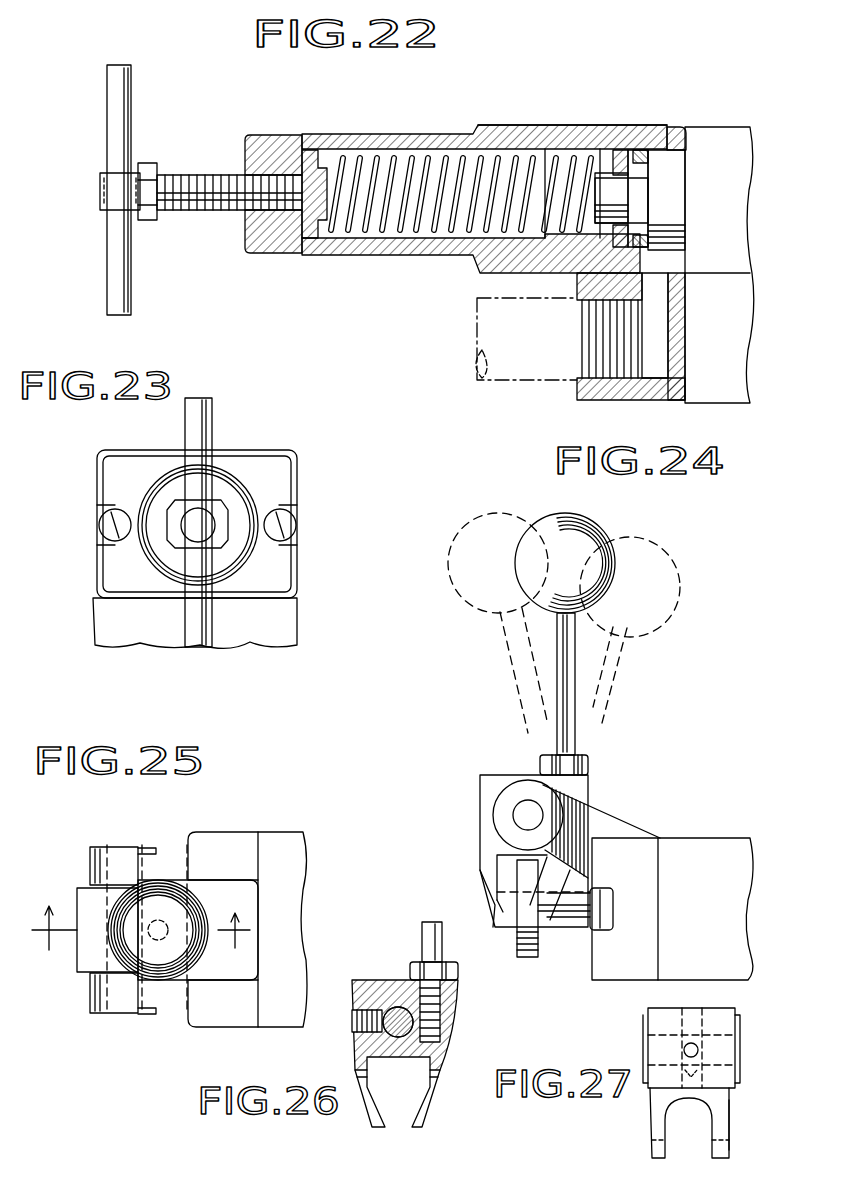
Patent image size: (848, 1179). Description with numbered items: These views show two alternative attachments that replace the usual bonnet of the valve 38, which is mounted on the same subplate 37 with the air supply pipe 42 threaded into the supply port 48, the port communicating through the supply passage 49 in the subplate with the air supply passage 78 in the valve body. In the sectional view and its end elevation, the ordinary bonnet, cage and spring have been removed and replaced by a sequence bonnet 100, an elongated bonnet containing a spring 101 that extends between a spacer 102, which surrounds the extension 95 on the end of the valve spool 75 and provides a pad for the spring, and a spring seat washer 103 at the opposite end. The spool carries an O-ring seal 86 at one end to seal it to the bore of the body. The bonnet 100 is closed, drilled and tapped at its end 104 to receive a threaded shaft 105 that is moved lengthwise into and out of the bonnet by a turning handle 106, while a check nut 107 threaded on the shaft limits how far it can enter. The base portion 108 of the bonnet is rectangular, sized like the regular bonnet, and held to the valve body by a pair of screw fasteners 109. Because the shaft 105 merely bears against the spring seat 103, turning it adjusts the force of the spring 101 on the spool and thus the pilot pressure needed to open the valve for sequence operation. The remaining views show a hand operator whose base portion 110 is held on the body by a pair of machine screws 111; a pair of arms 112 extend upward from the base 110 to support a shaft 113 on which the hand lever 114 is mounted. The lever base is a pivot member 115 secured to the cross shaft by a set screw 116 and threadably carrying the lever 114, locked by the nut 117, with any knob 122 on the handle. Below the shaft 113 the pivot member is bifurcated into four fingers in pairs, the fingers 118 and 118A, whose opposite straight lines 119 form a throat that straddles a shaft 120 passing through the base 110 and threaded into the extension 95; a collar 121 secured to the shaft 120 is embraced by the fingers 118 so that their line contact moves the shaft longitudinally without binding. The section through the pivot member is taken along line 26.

In FIG. 25, the section line 26 is at (132, 938).
In FIG. 22, the subplate 37 is at (745, 342).
In FIG. 23, the subplate 37 is at (307, 625).
In FIG. 22, the valve 38 is at (743, 120).
In FIG. 24, the valve 38 is at (724, 830).
In FIG. 25, the valve 38 is at (302, 816).
In FIG. 22, the air supply pipe 42 is at (482, 340).
In FIG. 22, the supply port 48 is at (580, 378).
In FIG. 22, the supply passage 49 is at (668, 298).
In FIG. 22, the valve spool 75 is at (665, 158).
In FIG. 22, the air supply passage 78 is at (675, 127).
In FIG. 22, the O-ring seal 86 is at (640, 150).
In FIG. 22, the extension 95 is at (620, 185).
In FIG. 22, the sequence bonnet 100 is at (456, 133).
In FIG. 23, the sequence bonnet 100 is at (273, 448).
In FIG. 22, the spring 101 is at (378, 160).
In FIG. 22, the spacer 102 is at (620, 150).
In FIG. 22, the spring seat washer 103 is at (318, 150).
In FIG. 22, the end 104 is at (272, 135).
In FIG. 23, the end 104 is at (160, 548).
In FIG. 22, the threaded shaft 105 is at (190, 175).
In FIG. 23, the threaded shaft 105 is at (212, 540).
In FIG. 22, the turning handle 106 is at (115, 90).
In FIG. 23, the turning handle 106 is at (212, 408).
In FIG. 22, the check nut 107 is at (148, 163).
In FIG. 23, the check nut 107 is at (218, 510).
In FIG. 22, the base portion 108 is at (515, 125).
In FIG. 23, the screw fasteners 109 is at (106, 516).
In FIG. 24, the base portion 110 is at (618, 850).
In FIG. 24, the machine screws 111 is at (608, 900).
In FIG. 25, the arms 112 is at (205, 860).
In FIG. 24, the shaft 113 is at (520, 808).
In FIG. 25, the shaft 113 is at (122, 845).
In FIG. 26, the shaft 113 is at (392, 1006).
In FIG. 24, the hand lever 114 is at (575, 668).
In FIG. 26, the hand lever 114 is at (425, 928).
In FIG. 25, the pivot member 115 is at (88, 958).
In FIG. 26, the pivot member 115 is at (352, 988).
In FIG. 27, the pivot member 115 is at (660, 1018).
In FIG. 26, the set screw 116 is at (360, 1032).
In FIG. 27, the set screw 116 is at (698, 1050).
In FIG. 24, the nut 117 is at (590, 765).
In FIG. 26, the nut 117 is at (470, 963).
In FIG. 24, the fingers 118 is at (500, 895).
In FIG. 26, the fingers 118 is at (368, 1108).
In FIG. 27, the fingers 118 is at (639, 1127).
In FIG. 27, the fingers 118A is at (748, 1120).
In FIG. 26, the straight lines 119 is at (405, 1115).
In FIG. 27, the straight lines 119 is at (658, 1145).
In FIG. 24, the shaft 120 is at (575, 925).
In FIG. 24, the collar 121 is at (525, 950).
In FIG. 24, the knob 122 is at (600, 530).
In FIG. 25, the knob 122 is at (158, 898).